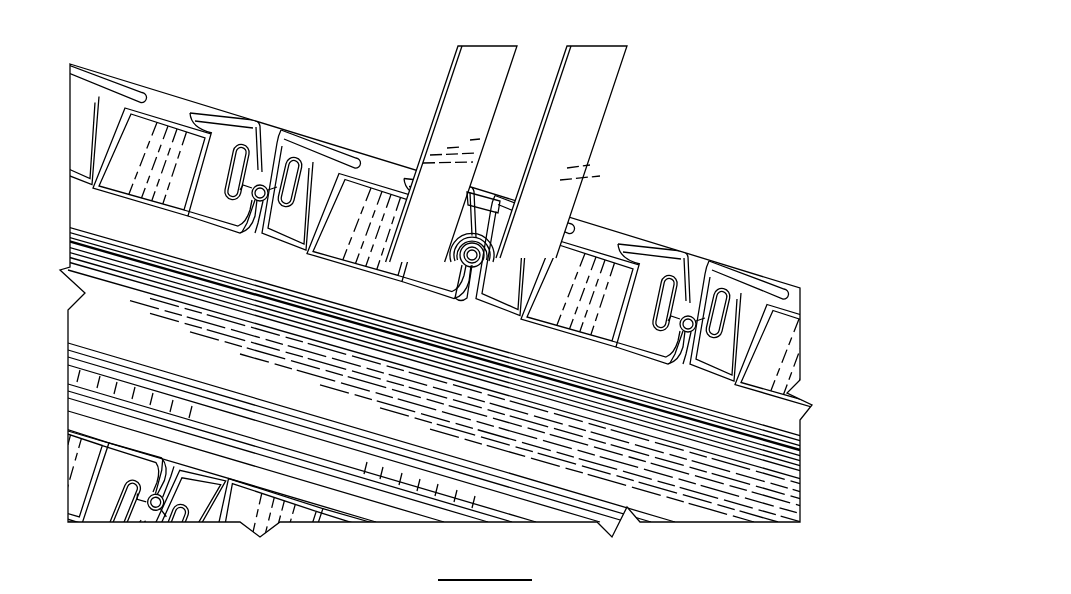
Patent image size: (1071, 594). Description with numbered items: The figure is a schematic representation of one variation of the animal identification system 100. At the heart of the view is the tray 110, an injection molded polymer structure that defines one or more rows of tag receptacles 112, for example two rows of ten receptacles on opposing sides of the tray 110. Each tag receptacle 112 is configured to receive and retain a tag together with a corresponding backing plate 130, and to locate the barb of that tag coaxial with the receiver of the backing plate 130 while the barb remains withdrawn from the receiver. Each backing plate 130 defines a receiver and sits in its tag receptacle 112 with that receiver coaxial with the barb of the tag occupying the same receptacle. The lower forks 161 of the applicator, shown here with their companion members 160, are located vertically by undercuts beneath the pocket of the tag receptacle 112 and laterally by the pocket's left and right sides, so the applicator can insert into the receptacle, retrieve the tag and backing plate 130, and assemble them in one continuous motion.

The animal identification system 100 is at (818, 94).
The tray 110 is at (757, 405).
The tag receptacle 112 is at (797, 446).
The backing plate 130 is at (517, 240).
The first fin 160 is at (583, 134).
The lower forks 161 is at (583, 134).